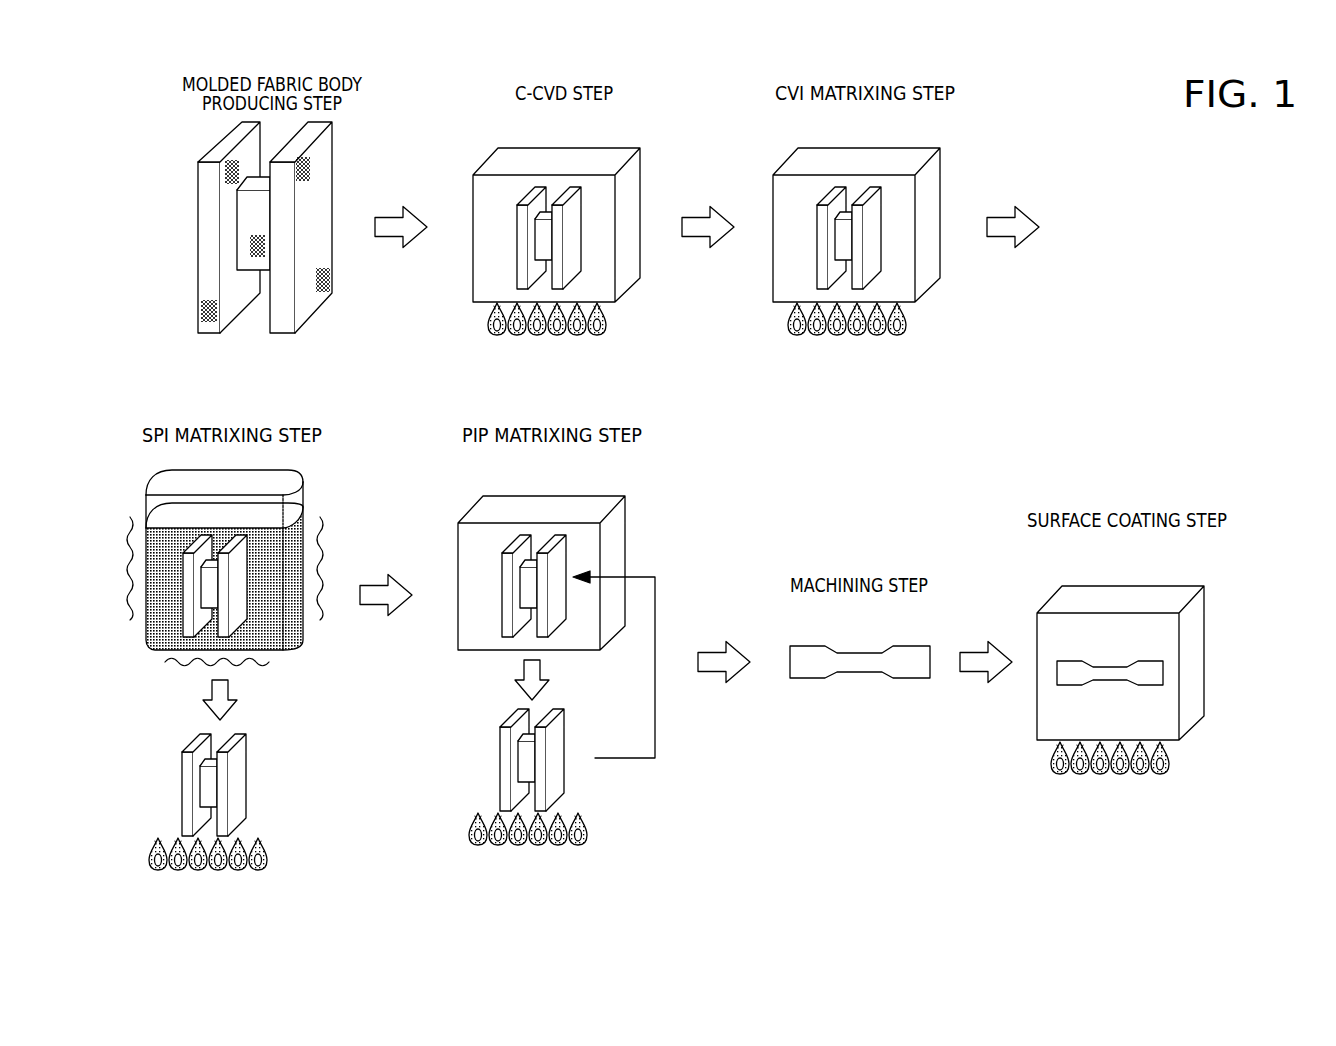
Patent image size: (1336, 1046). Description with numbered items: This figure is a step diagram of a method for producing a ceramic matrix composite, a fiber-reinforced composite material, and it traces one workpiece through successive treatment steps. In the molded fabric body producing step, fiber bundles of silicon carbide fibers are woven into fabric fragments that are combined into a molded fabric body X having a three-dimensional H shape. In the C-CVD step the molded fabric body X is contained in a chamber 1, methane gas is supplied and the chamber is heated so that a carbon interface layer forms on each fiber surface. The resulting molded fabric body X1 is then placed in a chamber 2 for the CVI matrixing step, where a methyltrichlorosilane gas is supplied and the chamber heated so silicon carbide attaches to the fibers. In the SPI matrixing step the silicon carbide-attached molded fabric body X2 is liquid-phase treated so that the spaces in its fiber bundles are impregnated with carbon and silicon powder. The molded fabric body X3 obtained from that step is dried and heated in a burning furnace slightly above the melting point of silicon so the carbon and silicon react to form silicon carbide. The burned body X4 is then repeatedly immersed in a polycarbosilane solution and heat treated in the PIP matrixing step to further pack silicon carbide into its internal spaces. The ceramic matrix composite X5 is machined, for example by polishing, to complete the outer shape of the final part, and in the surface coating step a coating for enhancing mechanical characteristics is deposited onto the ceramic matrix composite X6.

The molded fabric body X is at (202, 272).
The chamber 1 is at (473, 278).
The chamber 2 is at (943, 175).
The molded fabric body X1 is at (820, 262).
The molded fabric body X2 is at (237, 540).
The molded fabric body X3 is at (182, 767).
The burned body X4 is at (513, 545).
The ceramic matrix composite X5 is at (867, 673).
The ceramic matrix composite X6 is at (1153, 662).